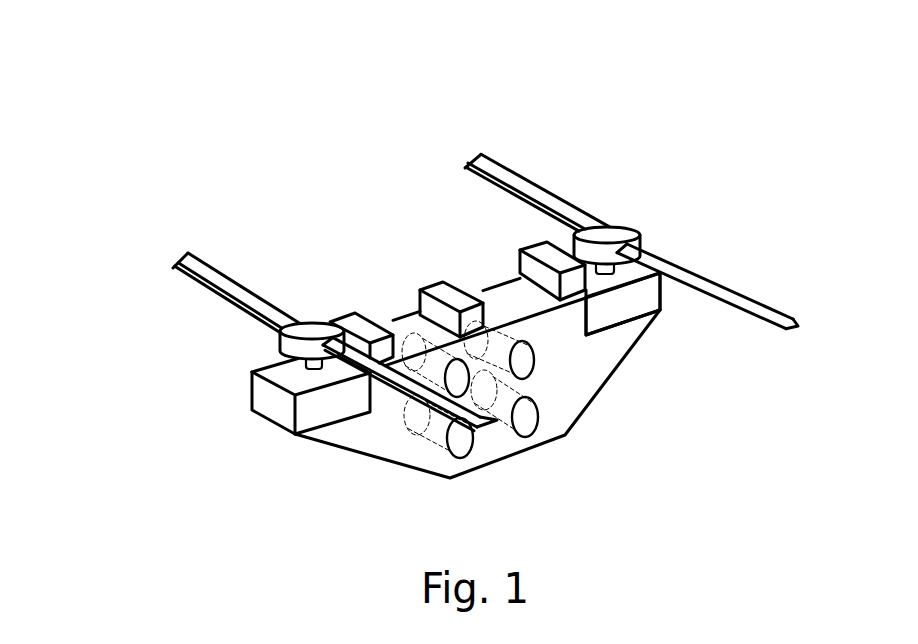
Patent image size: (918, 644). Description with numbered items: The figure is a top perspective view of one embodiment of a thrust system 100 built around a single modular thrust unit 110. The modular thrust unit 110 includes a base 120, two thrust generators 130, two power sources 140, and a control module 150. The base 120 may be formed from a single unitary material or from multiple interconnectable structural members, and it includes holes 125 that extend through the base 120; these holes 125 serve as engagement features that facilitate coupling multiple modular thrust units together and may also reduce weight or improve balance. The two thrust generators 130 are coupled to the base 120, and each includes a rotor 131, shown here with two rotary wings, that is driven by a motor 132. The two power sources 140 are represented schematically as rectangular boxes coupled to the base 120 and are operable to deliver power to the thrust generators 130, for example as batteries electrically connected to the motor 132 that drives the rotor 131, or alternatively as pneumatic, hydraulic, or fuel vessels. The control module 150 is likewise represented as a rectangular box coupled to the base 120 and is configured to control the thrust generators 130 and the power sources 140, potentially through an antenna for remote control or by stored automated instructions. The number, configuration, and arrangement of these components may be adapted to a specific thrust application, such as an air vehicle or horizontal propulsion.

The thrust system 100 is at (182, 86).
The modular thrust unit 110 is at (250, 513).
The base 120 is at (594, 381).
The holes 125 is at (527, 422).
The thrust generators 130 is at (137, 372).
The rotor 131 is at (288, 348).
The motor 132 is at (273, 408).
The power sources 140 is at (342, 315).
The control module 150 is at (443, 287).